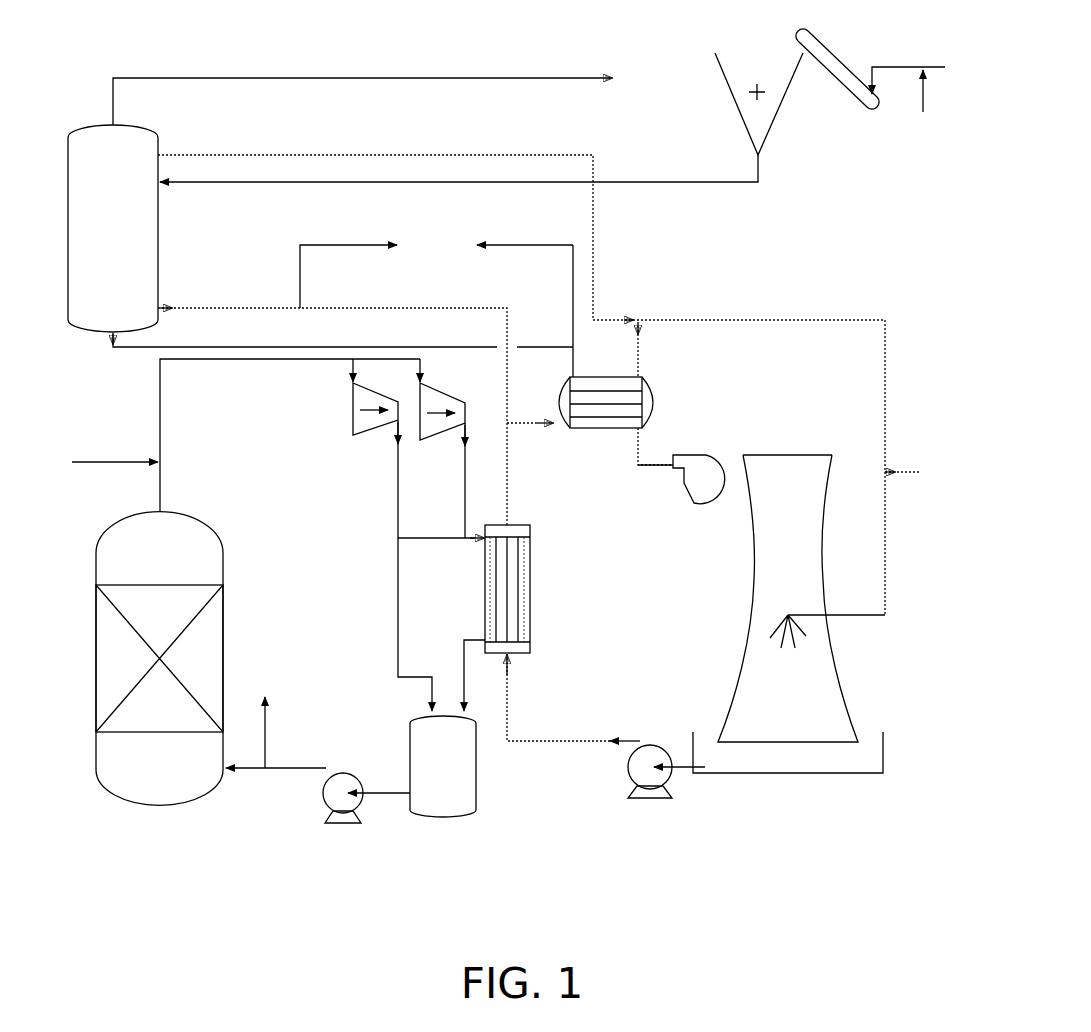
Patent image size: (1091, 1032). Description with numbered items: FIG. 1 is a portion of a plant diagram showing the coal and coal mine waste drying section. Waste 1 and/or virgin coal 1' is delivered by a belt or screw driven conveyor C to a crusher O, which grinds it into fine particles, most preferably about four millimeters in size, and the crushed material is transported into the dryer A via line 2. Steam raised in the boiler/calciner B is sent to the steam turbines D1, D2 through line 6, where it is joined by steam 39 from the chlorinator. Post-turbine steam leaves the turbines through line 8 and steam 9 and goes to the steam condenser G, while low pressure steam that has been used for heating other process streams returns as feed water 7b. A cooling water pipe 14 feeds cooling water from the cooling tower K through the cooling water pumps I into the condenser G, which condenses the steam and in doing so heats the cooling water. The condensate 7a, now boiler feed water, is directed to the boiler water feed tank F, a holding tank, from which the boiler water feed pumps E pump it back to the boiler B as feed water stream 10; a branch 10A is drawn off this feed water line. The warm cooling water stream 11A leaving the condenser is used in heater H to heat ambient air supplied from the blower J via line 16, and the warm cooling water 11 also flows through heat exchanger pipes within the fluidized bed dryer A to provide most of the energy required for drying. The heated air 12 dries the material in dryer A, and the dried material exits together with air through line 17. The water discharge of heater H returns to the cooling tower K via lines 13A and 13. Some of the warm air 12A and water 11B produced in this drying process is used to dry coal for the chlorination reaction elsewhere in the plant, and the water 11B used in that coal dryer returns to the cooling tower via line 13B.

The waste 1 is at (915, 78).
The virgin coal 1' is at (924, 99).
The line 2 is at (459, 176).
The steam line 6 is at (290, 435).
The condensate 7a is at (471, 666).
The feed water 7b is at (406, 565).
The turbine D2 outlet line 8 is at (443, 480).
The steam 9 is at (441, 548).
The feed water stream 10 is at (276, 761).
The water branch line 10A is at (265, 721).
The warm cooling water 11 is at (343, 416).
The warm cooling water stream 11A is at (530, 413).
The water 11B is at (377, 268).
The heated air 12 is at (343, 311).
The warm air 12A is at (525, 237).
The line 13 is at (521, 376).
The line 13A is at (655, 393).
The line 13B is at (922, 465).
The cooling water pipe 14 is at (573, 697).
The air line from blower to heater 16 is at (655, 473).
The line 17 is at (388, 95).
The steam 39 is at (95, 457).
The dryer A is at (113, 228).
The boiler/calciner B is at (159, 659).
The belt or screw driven conveyor C is at (844, 96).
The steam turbine D1 is at (375, 423).
The steam turbine D2 is at (442, 424).
The boiler water feed pump E is at (357, 808).
The boiler water feed tank F is at (443, 766).
The steam condenser G is at (537, 589).
The heater H is at (606, 416).
The cooling water pump I is at (660, 781).
The blower J is at (702, 493).
The cooling tower K is at (789, 614).
The crusher O is at (764, 104).